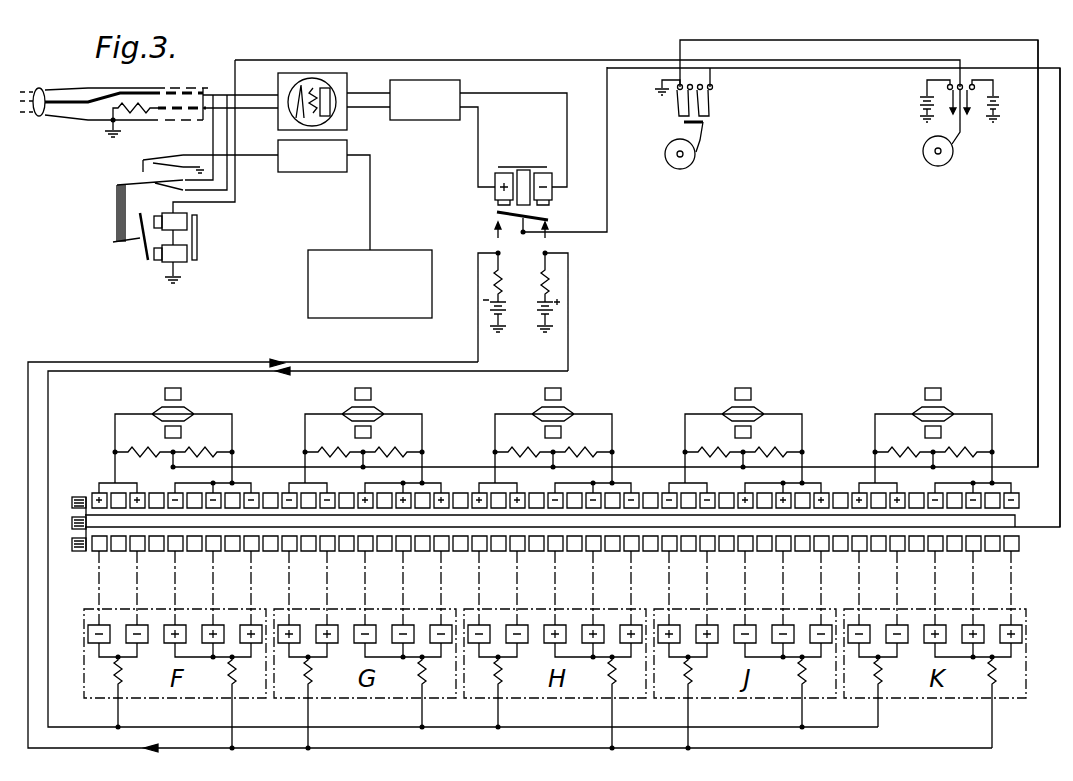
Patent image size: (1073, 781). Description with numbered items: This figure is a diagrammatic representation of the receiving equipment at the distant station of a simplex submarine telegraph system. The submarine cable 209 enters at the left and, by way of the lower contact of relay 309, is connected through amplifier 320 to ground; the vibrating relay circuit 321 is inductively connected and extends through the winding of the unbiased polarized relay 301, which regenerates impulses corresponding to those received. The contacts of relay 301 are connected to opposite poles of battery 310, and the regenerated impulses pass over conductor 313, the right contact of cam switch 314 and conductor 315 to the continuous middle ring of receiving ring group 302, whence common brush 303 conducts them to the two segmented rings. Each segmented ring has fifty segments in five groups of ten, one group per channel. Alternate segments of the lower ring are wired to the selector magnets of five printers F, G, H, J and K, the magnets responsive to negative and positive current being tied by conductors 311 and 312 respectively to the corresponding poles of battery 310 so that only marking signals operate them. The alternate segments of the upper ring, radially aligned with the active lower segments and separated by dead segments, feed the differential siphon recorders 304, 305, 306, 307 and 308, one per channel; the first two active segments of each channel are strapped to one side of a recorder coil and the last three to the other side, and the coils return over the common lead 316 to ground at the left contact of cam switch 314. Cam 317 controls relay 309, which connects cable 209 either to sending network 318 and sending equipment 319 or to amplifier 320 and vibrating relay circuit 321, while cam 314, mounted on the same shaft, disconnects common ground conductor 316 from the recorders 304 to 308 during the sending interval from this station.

The submarine cable 209 is at (40, 118).
The polarized relay 301 is at (492, 190).
The receiving ring group 302 is at (66, 535).
The common brush 303 is at (92, 557).
The siphon recorder 304 is at (186, 408).
The siphon recorder 305 is at (378, 408).
The siphon recorder 306 is at (568, 408).
The siphon recorder 307 is at (756, 408).
The siphon recorder 308 is at (918, 406).
The relay 309 is at (193, 240).
The battery 310 is at (545, 336).
The conductor 311 is at (138, 371).
The conductor 312 is at (88, 363).
The conductor 313 is at (608, 216).
The cam switch 314 is at (688, 168).
The conductor 315 is at (1058, 262).
The common lead 316 is at (1036, 226).
The cam 317 is at (933, 162).
The sending network 318 is at (300, 172).
The sending equipment 319 is at (333, 250).
The amplifier 320 is at (298, 73).
The vibrating relay circuit 321 is at (415, 80).